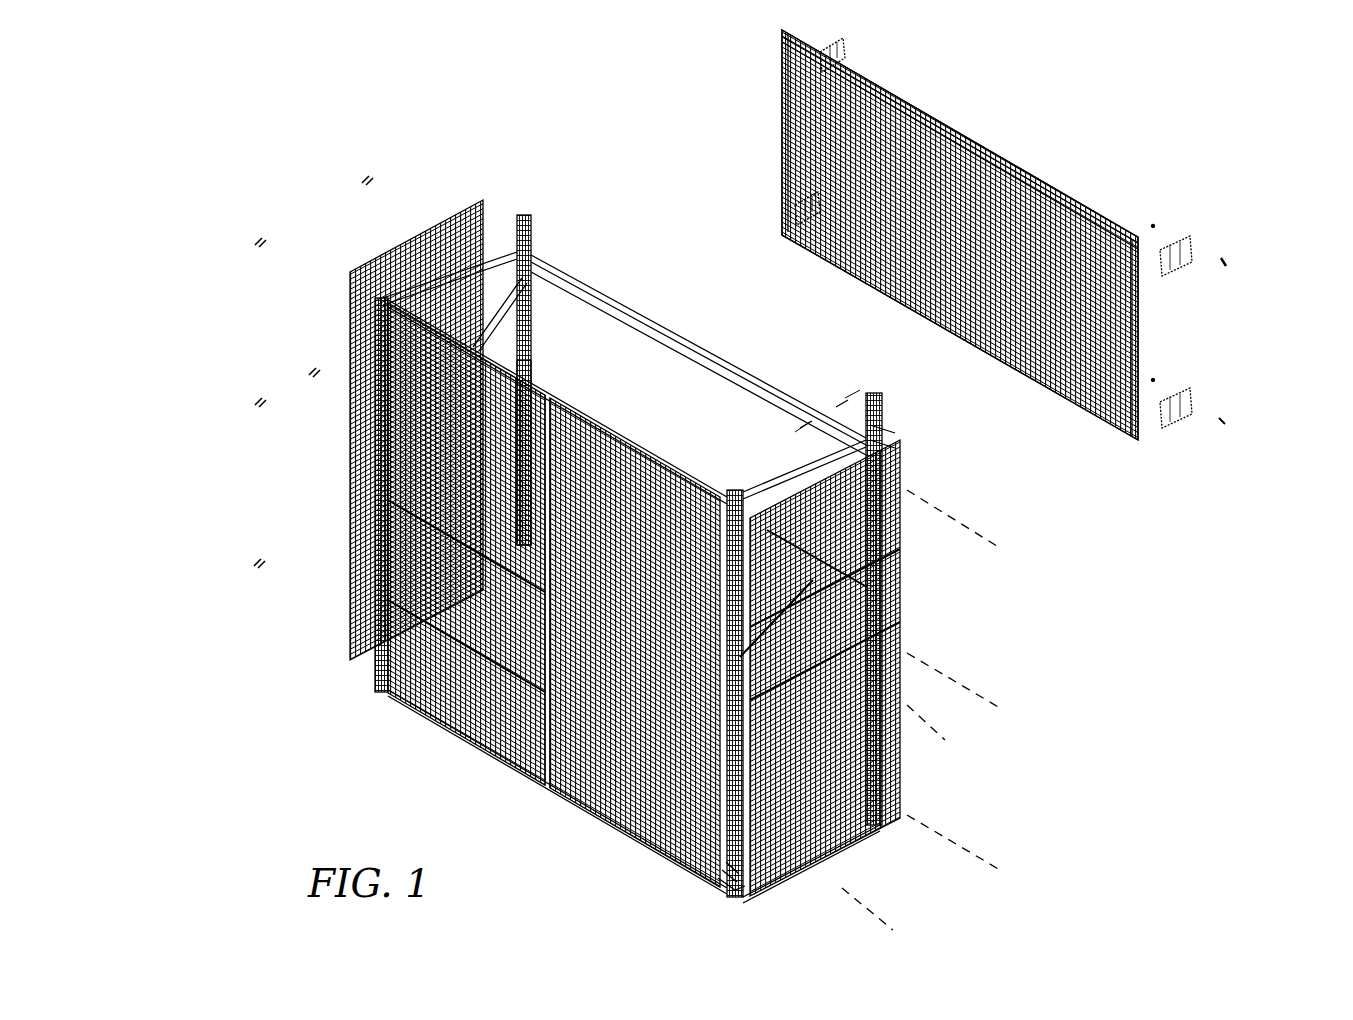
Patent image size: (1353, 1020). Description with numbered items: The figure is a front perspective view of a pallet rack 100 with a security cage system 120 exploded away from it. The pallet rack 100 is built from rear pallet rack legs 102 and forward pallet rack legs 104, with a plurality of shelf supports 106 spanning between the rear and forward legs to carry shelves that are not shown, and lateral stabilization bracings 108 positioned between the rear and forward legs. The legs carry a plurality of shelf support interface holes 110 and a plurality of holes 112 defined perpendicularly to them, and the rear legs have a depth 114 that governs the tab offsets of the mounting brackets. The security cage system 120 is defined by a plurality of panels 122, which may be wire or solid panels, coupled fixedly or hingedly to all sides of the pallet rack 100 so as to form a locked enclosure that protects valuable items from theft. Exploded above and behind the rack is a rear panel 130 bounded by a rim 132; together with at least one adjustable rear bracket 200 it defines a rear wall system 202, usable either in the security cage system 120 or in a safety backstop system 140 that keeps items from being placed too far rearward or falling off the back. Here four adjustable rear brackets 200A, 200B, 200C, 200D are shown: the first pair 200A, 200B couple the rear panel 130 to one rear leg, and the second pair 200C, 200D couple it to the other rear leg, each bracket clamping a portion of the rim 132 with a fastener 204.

The pallet rack 100 is at (734, 481).
The rear pallet rack legs 102 is at (535, 222).
The forward pallet rack legs 104 is at (375, 686).
The shelf supports 106 is at (498, 252).
The lateral stabilization bracings 108 is at (502, 316).
The shelf support interface holes 110 is at (725, 878).
The holes 112 is at (886, 447).
The depth 114 is at (838, 392).
The security cage system 120 is at (215, 268).
The panels 122 is at (760, 468).
The rear panel 130 is at (976, 231).
The rim 132 is at (1063, 192).
The safety backstop system 140 is at (969, 135).
The adjustable rear bracket 200 is at (977, 256).
The adjustable rear bracket 200A is at (1180, 270).
The adjustable rear bracket 200B is at (1180, 425).
The adjustable rear bracket 200C is at (845, 52).
The adjustable rear bracket 200D is at (805, 212).
The rear wall system 202 is at (820, 22).
The fastener 204 is at (1228, 258).